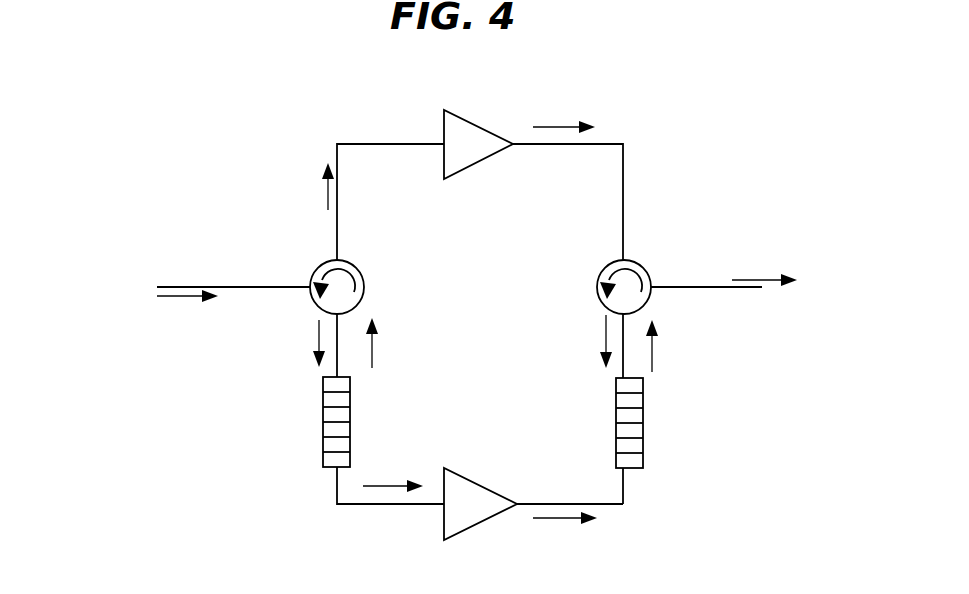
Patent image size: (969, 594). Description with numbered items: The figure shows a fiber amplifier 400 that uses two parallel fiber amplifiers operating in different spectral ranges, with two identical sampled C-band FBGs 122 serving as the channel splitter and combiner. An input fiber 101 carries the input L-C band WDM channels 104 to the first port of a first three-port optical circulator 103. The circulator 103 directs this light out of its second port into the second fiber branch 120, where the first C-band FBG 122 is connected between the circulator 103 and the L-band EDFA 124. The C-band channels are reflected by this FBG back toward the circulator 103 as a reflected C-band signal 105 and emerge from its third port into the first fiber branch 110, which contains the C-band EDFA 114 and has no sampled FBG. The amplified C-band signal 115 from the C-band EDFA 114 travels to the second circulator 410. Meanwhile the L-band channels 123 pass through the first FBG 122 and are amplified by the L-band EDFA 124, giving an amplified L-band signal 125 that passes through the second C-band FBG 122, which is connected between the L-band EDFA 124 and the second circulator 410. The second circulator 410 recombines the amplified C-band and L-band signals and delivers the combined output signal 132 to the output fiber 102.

The fiber amplifier 400 is at (183, 159).
The first fiber branch 110 is at (403, 105).
The second fiber branch 120 is at (382, 520).
The C-band EDFA 114 is at (470, 168).
The L-band EDFA 124 is at (480, 482).
The first 3-port optical circulator 103 is at (362, 270).
The second optical circulator 410 is at (598, 285).
The C-band FBG 122 is at (323, 420).
The input fiber 101 is at (246, 286).
The output fiber 102 is at (705, 289).
The input L-C band WDM channels 104 is at (190, 298).
The reflected C-band signal 105 is at (326, 200).
The amplified C-band signal 115 is at (565, 127).
The transmitted L-band signal 123 is at (390, 483).
The amplified L-band signal 125 is at (556, 522).
The combined output signal 132 is at (740, 280).